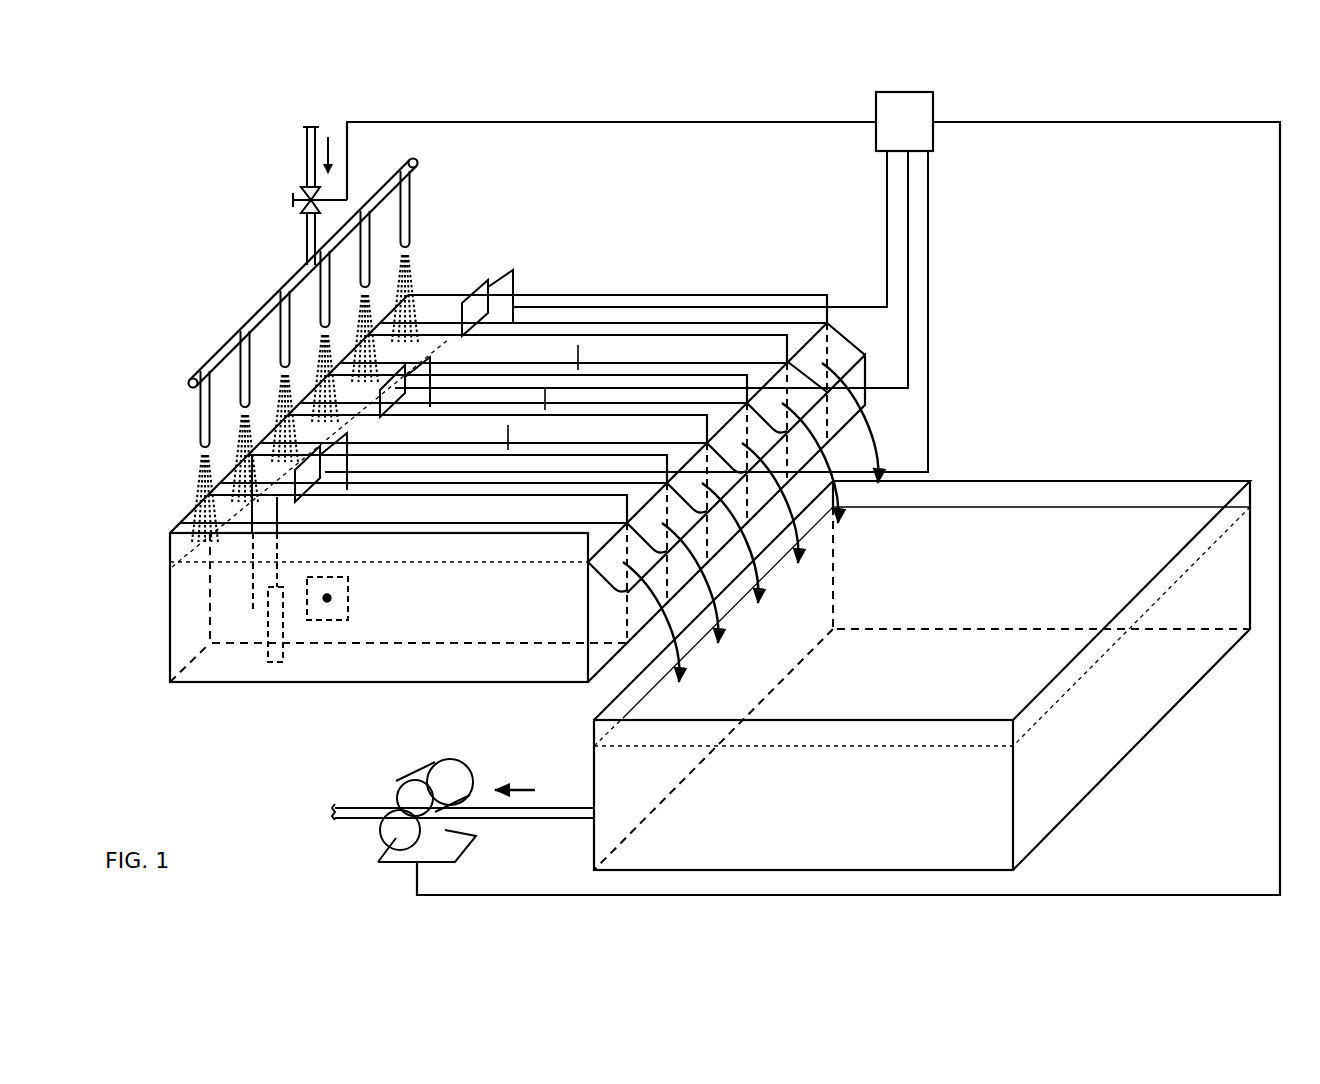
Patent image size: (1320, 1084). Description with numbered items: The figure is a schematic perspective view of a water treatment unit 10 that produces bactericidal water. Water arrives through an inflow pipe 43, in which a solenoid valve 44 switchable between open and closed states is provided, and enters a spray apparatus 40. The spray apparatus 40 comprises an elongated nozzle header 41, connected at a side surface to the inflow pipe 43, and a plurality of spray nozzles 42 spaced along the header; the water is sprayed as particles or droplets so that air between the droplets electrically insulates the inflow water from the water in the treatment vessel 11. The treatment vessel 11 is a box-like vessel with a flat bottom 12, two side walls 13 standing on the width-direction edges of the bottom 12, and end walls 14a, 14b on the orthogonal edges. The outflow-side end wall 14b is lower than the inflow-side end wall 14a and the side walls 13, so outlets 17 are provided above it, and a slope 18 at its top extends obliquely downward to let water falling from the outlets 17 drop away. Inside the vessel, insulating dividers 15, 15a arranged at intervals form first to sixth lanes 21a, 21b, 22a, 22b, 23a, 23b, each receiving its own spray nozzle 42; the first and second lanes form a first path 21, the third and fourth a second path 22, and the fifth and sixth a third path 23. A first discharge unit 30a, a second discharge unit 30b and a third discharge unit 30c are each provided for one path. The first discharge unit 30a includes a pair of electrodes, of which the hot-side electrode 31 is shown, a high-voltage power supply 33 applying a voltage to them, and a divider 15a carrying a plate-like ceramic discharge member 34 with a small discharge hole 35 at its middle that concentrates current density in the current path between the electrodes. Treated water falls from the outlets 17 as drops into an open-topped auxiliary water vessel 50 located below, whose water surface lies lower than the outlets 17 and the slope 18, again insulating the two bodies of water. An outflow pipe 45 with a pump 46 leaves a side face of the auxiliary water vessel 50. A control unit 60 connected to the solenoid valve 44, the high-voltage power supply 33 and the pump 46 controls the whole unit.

The water treatment unit 10 is at (172, 133).
The treatment vessel 11 is at (168, 650).
The bottom 12 is at (377, 663).
The side walls 13 is at (735, 292).
The end wall 14a is at (185, 527).
The end wall 14b is at (605, 627).
The dividers 15 is at (545, 387).
The dividers 15a is at (508, 425).
The outlets 17 is at (768, 375).
The slope 18 is at (842, 340).
The first path 21 is at (538, 598).
The first lane 21a is at (438, 518).
The second lane 21b is at (477, 477).
The second path 22 is at (170, 250).
The third lane 22a is at (330, 338).
The fourth lane 22b is at (325, 274).
The third path 23 is at (707, 240).
The fifth lane 23a is at (617, 360).
The sixth lane 23b is at (692, 320).
The first discharge unit 30a is at (356, 511).
The second discharge unit 30b is at (430, 431).
The third discharge unit 30c is at (492, 275).
The electrode 31 is at (268, 658).
The high-voltage power supply 33 is at (393, 400).
The discharge member 34 is at (350, 591).
The discharge hole 35 is at (327, 603).
The spray apparatus 40 is at (292, 267).
The nozzle header 41 is at (240, 333).
The spray nozzles 42 is at (368, 236).
The inflow pipe 43 is at (307, 148).
The solenoid valve 44 is at (305, 212).
The outflow pipe 45 is at (537, 818).
The pump 46 is at (398, 862).
The auxiliary water vessel 50 is at (1135, 478).
The control unit 60 is at (935, 140).